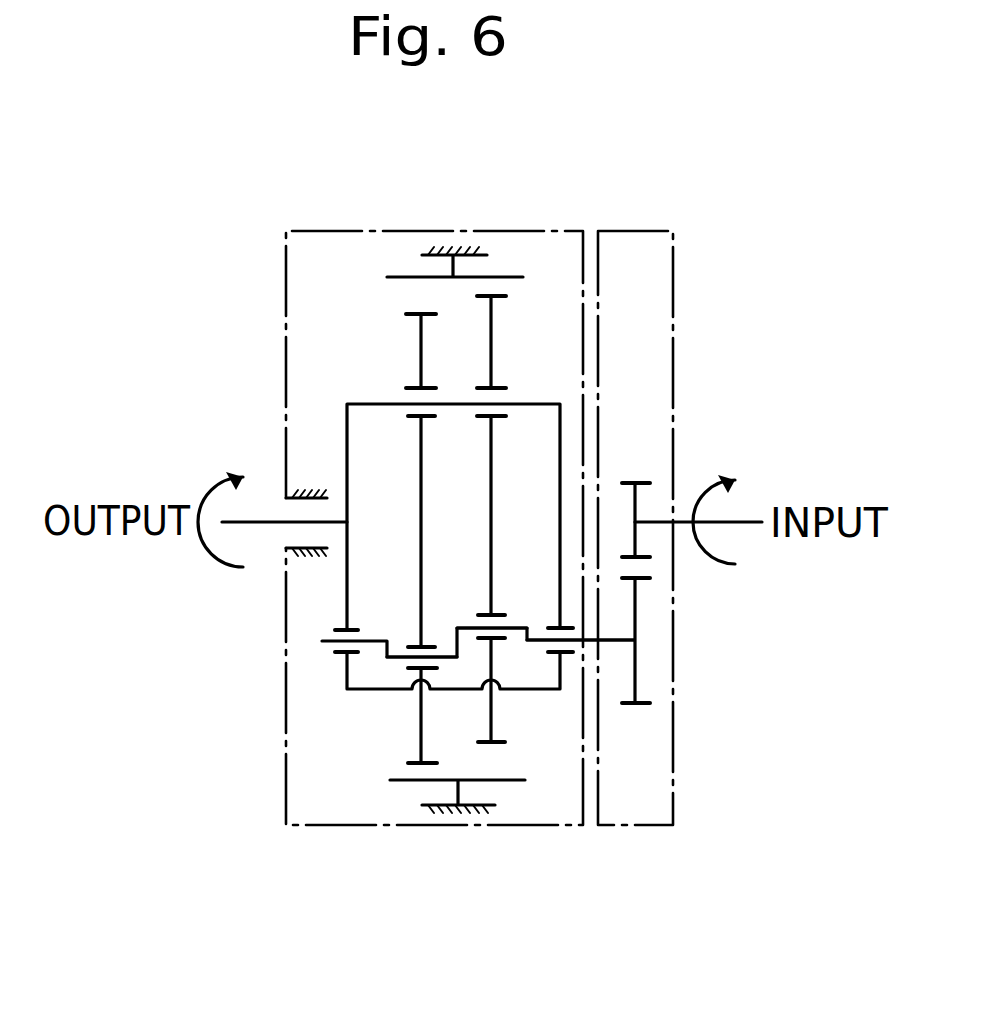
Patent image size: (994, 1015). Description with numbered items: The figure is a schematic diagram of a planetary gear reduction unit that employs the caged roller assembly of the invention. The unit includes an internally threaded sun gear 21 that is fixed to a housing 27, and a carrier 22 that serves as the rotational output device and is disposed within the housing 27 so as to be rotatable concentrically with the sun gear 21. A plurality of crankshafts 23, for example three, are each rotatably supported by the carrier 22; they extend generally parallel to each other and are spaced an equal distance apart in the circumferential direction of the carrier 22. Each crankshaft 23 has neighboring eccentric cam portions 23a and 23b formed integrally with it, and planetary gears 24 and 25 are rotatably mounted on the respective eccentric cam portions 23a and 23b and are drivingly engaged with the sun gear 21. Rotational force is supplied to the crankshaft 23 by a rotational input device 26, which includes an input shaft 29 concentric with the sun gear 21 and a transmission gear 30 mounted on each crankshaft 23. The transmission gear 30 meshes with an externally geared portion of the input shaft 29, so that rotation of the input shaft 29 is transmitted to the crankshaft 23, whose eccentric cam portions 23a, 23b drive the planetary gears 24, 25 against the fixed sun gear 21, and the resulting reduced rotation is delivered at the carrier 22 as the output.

The sun gear 21 is at (410, 781).
The carrier 22 is at (350, 592).
The crankshaft 23 is at (610, 640).
The eccentric cam portion 23a is at (397, 658).
The eccentric cam portion 23b is at (515, 633).
The planetary gear 24 is at (420, 732).
The planetary gear 25 is at (494, 718).
The rotational input device 26 is at (675, 745).
The housing 27 is at (448, 252).
The input shaft 29 is at (735, 522).
The transmission gear 30 is at (637, 673).